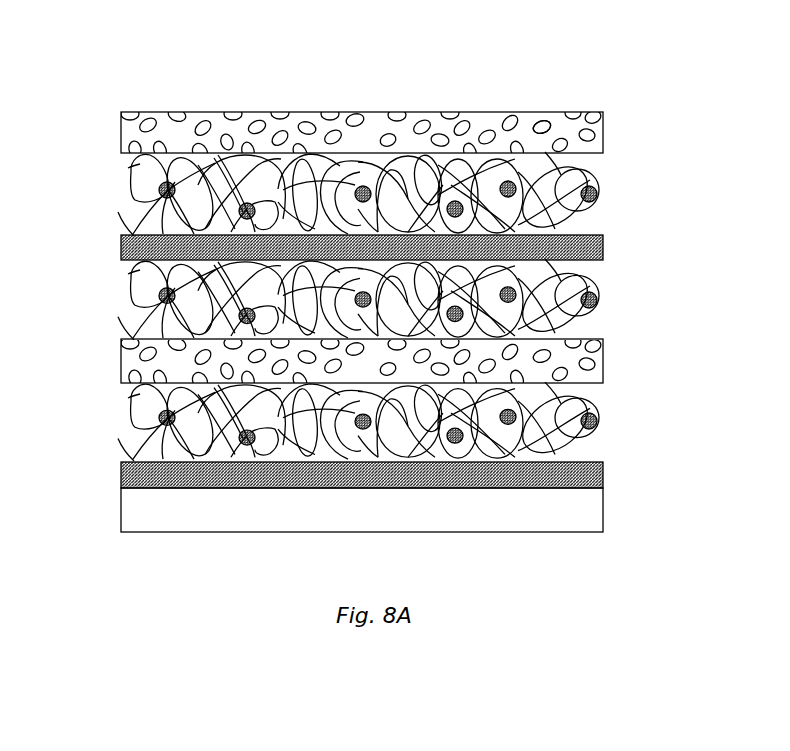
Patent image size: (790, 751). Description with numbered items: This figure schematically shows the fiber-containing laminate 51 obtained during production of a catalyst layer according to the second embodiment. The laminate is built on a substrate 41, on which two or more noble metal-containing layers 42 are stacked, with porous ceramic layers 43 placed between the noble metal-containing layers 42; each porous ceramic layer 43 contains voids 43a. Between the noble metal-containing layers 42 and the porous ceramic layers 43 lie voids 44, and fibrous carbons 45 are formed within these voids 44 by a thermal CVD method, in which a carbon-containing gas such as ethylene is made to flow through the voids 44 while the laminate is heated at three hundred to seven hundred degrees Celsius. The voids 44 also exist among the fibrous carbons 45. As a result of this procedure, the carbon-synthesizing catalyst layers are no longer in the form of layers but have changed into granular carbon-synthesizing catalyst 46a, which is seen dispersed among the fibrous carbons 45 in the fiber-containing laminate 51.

The fiber-containing laminate 51 is at (367, 92).
The substrate 41 is at (585, 512).
The noble metal-containing layer 42 is at (601, 246).
The porous ceramic layer 43 is at (396, 247).
The void 43a is at (543, 127).
The void 44 is at (600, 165).
The fibrous carbon 45 is at (131, 170).
The granular carbon-synthesizing catalyst 46a is at (597, 194).